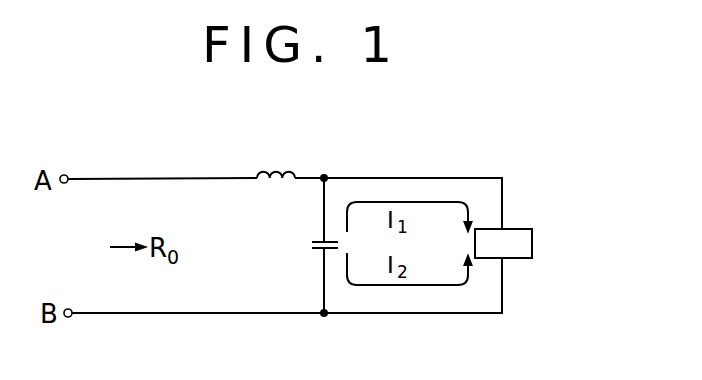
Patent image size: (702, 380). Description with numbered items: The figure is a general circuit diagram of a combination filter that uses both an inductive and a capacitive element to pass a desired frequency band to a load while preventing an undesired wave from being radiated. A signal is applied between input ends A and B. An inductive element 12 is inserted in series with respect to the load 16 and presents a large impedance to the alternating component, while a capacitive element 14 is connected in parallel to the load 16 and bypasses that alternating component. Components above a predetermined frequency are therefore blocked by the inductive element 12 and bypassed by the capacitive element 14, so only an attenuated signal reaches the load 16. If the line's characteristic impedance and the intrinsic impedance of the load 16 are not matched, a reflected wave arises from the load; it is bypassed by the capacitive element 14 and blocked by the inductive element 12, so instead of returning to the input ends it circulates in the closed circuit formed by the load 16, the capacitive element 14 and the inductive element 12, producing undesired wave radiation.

The inductive element 12 is at (277, 163).
The capacitive element 14 is at (314, 245).
The load 16 is at (533, 246).